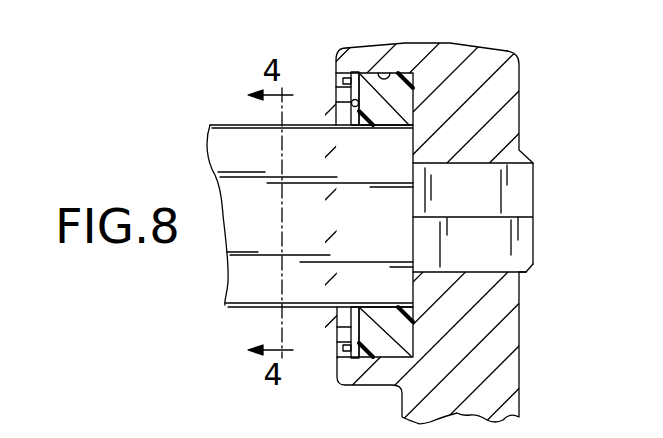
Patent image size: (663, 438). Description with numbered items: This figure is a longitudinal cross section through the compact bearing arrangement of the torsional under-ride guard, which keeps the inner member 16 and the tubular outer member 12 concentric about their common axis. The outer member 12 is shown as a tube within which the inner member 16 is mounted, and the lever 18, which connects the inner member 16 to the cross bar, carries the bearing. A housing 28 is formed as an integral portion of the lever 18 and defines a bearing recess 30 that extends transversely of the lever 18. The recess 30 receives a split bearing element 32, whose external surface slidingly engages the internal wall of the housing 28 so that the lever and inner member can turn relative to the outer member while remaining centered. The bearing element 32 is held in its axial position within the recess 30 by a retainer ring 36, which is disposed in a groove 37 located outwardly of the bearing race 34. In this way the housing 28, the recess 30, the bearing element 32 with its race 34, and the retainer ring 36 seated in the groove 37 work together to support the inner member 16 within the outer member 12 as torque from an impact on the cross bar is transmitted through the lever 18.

The tubular outer member 12 is at (358, 230).
The inner member 16 is at (487, 205).
The lever 18 is at (495, 95).
The housing 28 is at (452, 42).
The bearing recess 30 is at (343, 82).
The split bearing element 32 is at (380, 112).
The bearing race 34 is at (384, 73).
The retainer ring 36 is at (349, 344).
The groove 37 is at (342, 350).